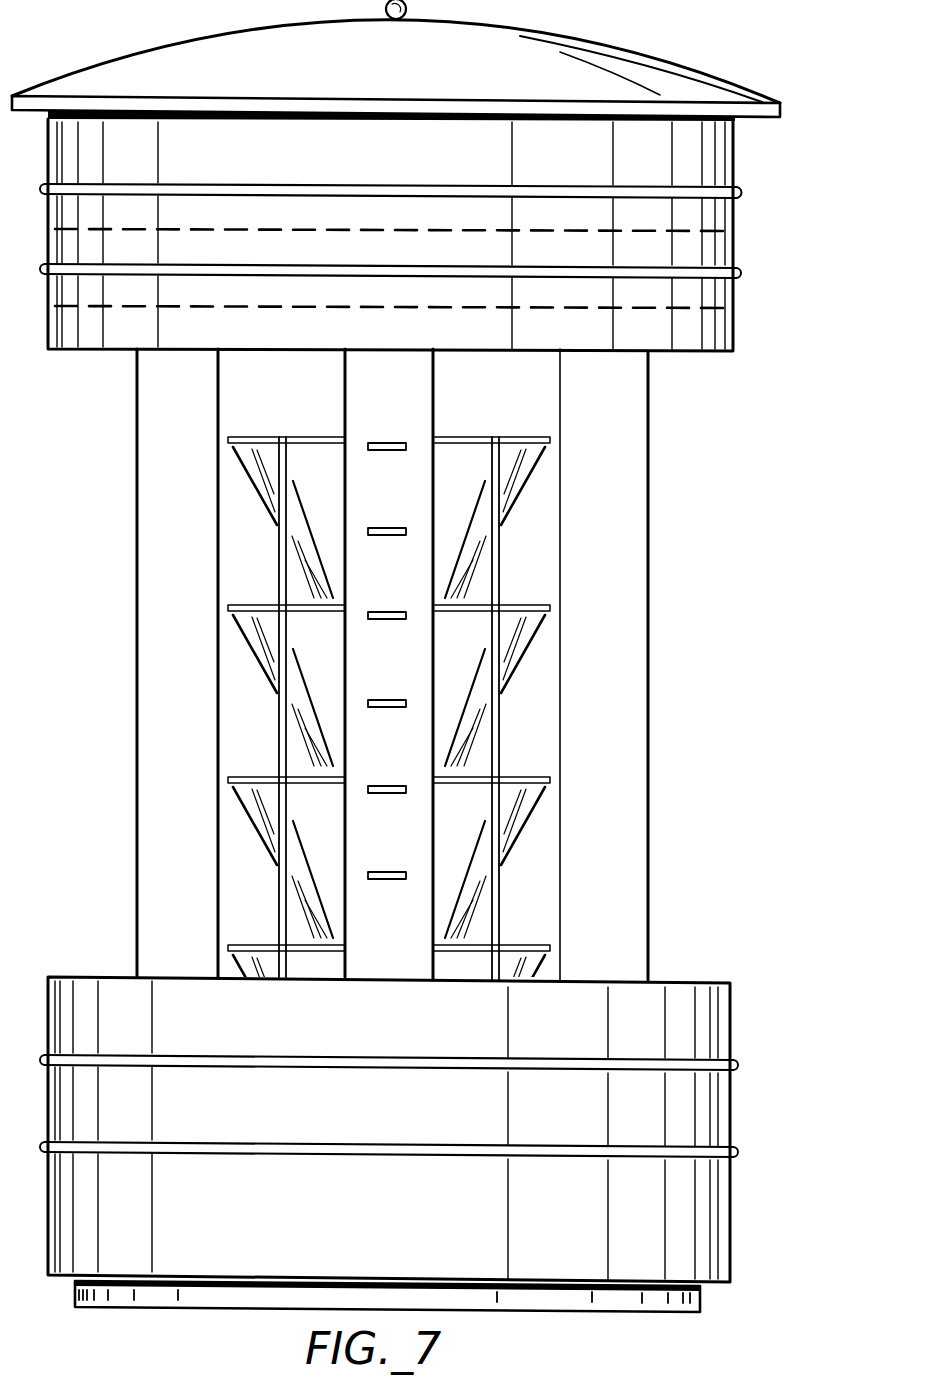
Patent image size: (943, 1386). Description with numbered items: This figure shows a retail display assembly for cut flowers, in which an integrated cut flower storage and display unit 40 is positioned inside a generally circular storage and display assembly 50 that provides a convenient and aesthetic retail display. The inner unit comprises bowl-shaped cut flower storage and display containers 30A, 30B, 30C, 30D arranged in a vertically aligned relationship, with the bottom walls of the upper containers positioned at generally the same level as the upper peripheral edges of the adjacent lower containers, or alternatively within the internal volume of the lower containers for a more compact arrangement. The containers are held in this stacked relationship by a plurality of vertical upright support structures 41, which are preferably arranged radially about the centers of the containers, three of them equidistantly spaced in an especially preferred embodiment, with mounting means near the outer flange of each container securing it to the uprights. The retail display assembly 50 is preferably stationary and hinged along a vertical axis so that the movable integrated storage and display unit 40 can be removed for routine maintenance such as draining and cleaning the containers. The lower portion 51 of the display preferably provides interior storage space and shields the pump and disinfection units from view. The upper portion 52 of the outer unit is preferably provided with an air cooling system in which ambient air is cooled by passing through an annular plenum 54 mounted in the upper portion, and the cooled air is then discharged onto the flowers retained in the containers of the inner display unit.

The storage and display assembly 50 is at (740, 252).
The upper portion 52 is at (382, 171).
The annular plenum 54 is at (712, 290).
The integrated cut flower storage and display unit 40 is at (383, 727).
The bowl-shaped container 30A is at (250, 462).
The bowl-shaped container 30B is at (255, 632).
The bowl-shaped container 30C is at (250, 795).
The bowl-shaped container 30D is at (537, 965).
The vertical upright support structure 41 is at (278, 897).
The lower portion 51 is at (378, 1126).